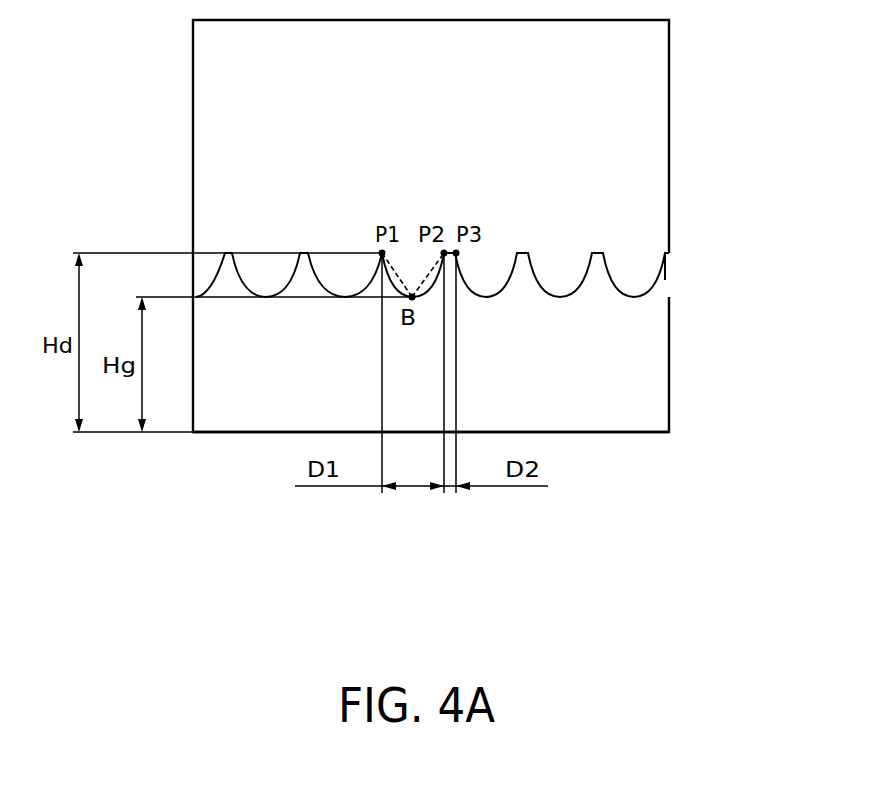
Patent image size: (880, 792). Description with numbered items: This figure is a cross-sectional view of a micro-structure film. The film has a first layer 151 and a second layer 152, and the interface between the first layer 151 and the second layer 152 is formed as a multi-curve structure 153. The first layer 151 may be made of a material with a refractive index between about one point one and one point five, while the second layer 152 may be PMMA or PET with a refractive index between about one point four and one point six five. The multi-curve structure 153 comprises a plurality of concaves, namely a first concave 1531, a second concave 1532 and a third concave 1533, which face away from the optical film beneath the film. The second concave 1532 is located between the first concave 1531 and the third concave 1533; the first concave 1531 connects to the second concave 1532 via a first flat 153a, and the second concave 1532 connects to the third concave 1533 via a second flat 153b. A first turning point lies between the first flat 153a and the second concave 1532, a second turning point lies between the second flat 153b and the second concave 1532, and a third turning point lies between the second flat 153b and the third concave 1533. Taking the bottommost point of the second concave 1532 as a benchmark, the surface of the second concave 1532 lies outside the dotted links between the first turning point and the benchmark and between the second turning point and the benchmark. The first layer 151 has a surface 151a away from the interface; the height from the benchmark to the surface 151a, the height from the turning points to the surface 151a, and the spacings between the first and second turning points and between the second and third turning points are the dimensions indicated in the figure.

The first layer 151 is at (661, 374).
The surface 151a is at (635, 432).
The second layer 152 is at (661, 131).
The multi-curve structure 153 is at (467, 218).
The first concave 1531 is at (319, 280).
The second concave 1532 is at (397, 277).
The third concave 1533 is at (462, 273).
The first flat 153a is at (380, 250).
The second flat 153b is at (446, 252).